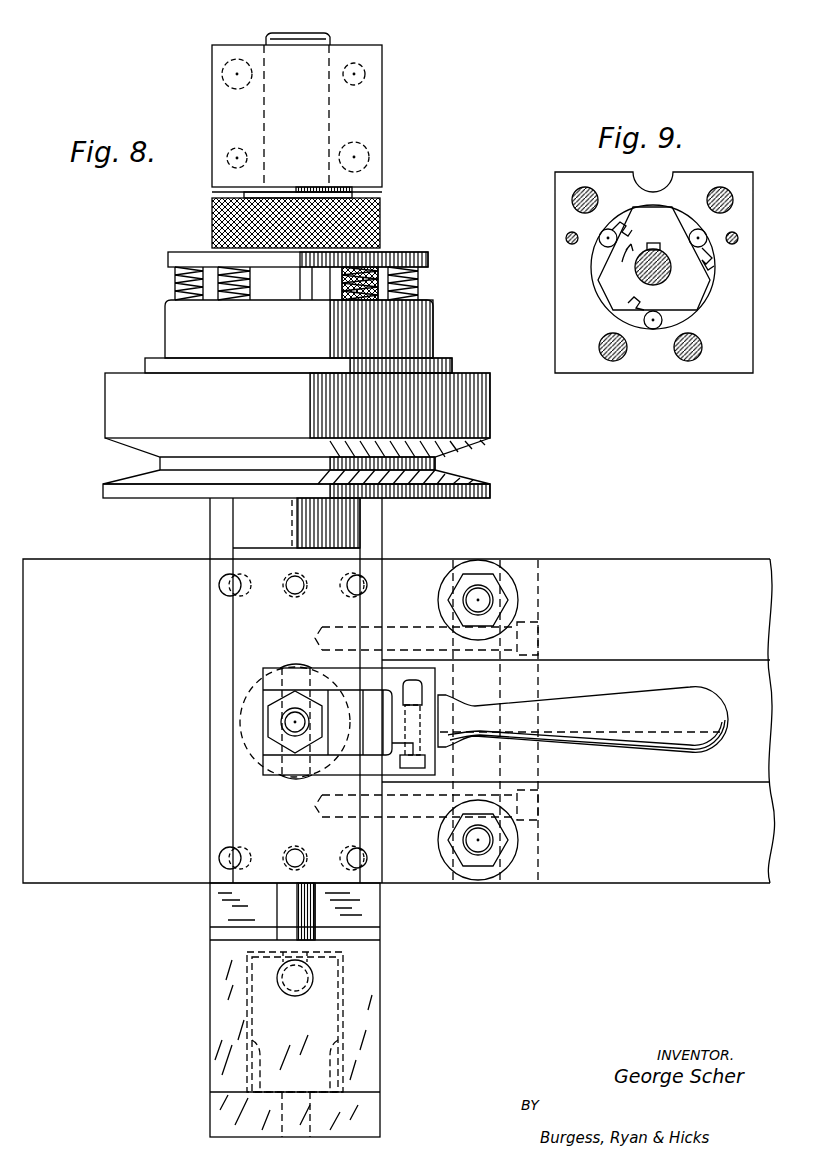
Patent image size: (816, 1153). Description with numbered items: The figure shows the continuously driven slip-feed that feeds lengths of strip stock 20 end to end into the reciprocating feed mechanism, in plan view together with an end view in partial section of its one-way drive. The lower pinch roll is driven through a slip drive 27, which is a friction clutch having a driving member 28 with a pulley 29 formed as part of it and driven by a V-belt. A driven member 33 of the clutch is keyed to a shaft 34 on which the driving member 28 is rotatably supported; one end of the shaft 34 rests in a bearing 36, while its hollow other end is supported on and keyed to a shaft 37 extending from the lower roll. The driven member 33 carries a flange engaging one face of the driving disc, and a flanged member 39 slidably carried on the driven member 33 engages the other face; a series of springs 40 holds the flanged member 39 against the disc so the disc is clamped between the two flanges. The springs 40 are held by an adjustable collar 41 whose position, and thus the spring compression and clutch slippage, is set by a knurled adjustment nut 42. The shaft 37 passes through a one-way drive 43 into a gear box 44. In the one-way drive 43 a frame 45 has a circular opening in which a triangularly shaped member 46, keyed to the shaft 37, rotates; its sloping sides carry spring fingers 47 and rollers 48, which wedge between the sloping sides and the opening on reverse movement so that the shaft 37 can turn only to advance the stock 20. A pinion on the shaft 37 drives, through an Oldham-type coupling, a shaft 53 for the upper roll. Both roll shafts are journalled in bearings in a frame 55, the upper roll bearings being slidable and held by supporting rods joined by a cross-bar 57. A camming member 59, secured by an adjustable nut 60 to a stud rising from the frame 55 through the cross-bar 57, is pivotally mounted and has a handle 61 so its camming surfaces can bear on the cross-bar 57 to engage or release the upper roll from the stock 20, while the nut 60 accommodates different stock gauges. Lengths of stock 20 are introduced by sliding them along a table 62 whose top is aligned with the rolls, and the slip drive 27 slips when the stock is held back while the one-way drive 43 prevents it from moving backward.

In FIG. 8, the stock 20 is at (623, 770).
In FIG. 8, the slip drive 27 is at (501, 437).
In FIG. 8, the driving member 28 is at (122, 420).
In FIG. 8, the pulley 29 is at (140, 474).
In FIG. 8, the driven member 33 is at (450, 324).
In FIG. 8, the shaft 34 is at (310, 45).
In FIG. 8, the bearing 36 is at (225, 113).
In FIG. 9, the shaft 37 is at (668, 278).
In FIG. 8, the flanged member 39 is at (166, 358).
In FIG. 8, the springs 40 is at (175, 285).
In FIG. 8, the adjustable collar 41 is at (194, 256).
In FIG. 8, the knurled adjustment nut 42 is at (211, 222).
In FIG. 9, the one-way drive 43 is at (542, 232).
In FIG. 8, the gear box 44 is at (210, 1015).
In FIG. 9, the frame 45 is at (604, 364).
In FIG. 9, the triangularly shaped member 46 is at (616, 292).
In FIG. 9, the spring fingers 47 is at (628, 214).
In FIG. 9, the rollers 48 is at (605, 236).
In FIG. 8, the shaft 53 is at (287, 912).
In FIG. 8, the frame 55 is at (220, 645).
In FIG. 8, the cross-bar 57 is at (234, 800).
In FIG. 8, the camming member 59 is at (340, 768).
In FIG. 8, the adjustable nut 60 is at (264, 721).
In FIG. 8, the handle 61 is at (562, 708).
In FIG. 8, the table 62 is at (636, 574).